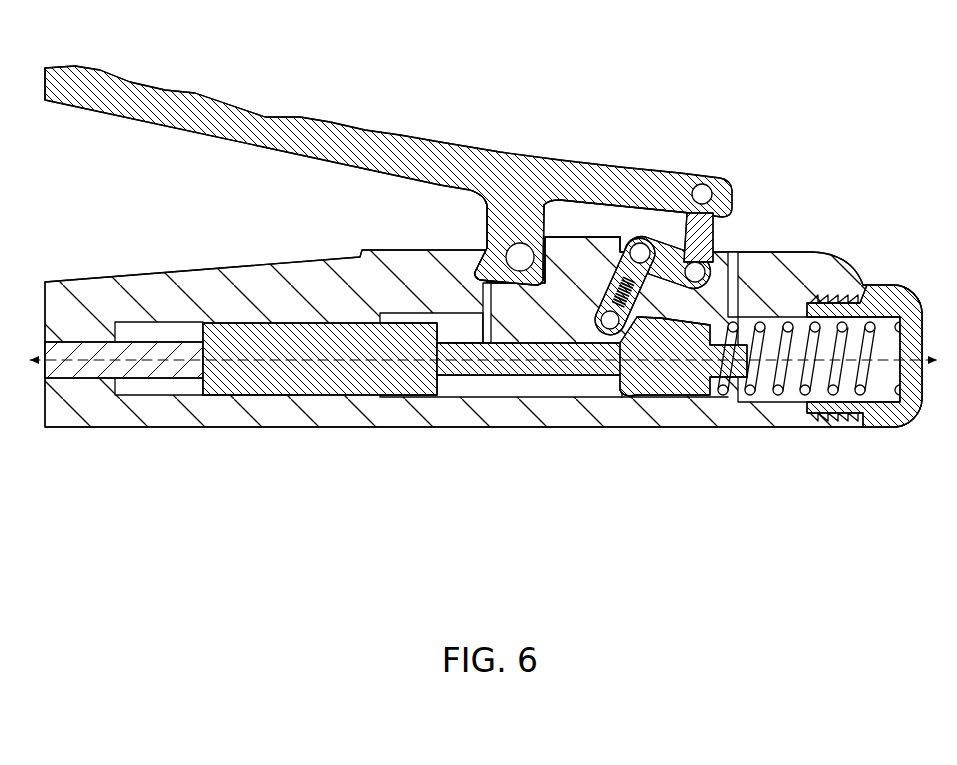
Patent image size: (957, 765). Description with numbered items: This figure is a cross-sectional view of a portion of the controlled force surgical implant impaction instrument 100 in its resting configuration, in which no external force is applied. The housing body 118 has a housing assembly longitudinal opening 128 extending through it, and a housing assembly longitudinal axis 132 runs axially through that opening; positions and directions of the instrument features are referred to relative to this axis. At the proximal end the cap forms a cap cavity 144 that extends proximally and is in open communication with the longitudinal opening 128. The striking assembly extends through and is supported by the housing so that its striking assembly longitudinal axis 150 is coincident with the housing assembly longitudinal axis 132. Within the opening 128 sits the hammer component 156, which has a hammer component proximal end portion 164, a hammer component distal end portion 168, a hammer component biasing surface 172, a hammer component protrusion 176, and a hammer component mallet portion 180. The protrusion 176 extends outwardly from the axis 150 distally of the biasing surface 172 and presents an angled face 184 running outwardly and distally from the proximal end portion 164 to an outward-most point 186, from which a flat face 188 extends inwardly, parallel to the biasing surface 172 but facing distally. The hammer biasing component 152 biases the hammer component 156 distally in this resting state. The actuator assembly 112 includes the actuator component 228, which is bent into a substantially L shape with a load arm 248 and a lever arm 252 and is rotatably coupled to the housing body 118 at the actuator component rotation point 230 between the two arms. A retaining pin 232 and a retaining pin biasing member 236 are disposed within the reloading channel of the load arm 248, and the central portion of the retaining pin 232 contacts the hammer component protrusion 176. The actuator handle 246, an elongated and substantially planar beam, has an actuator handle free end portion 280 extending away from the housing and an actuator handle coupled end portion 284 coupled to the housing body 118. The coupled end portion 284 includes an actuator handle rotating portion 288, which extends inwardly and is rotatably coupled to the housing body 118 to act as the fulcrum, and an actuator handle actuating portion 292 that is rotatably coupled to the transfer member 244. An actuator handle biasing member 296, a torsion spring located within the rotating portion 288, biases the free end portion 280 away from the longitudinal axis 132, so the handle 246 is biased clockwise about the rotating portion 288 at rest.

The instrument 100 is at (483, 270).
The actuator assembly 112 is at (562, 311).
The housing body 118 is at (296, 304).
The housing assembly longitudinal opening 128 is at (188, 388).
The housing assembly longitudinal axis 132 is at (490, 358).
The cap cavity 144 is at (878, 392).
The striking assembly longitudinal axis 150 is at (130, 357).
The hammer biasing component 152 is at (805, 395).
The hammer component 156 is at (403, 378).
The hammer component proximal end portion 164 is at (696, 398).
The hammer component distal end portion 168 is at (253, 380).
The hammer component biasing surface 172 is at (721, 395).
The hammer component protrusion 176 is at (637, 382).
The hammer component mallet portion 180 is at (320, 375).
The angled face 184 is at (655, 386).
The outward-most point 186 is at (627, 398).
The flat face 188 is at (567, 377).
The actuator component 228 is at (640, 236).
The actuator component rotation point 230 is at (642, 252).
The retaining pin 232 is at (560, 325).
The retaining pin biasing member 236 is at (617, 232).
The transfer member 244 is at (712, 235).
The actuator handle 246 is at (270, 123).
The load arm 248 is at (610, 282).
The lever arm 252 is at (718, 241).
The actuator handle free end portion 280 is at (68, 83).
The actuator handle coupled end portion 284 is at (613, 180).
The actuator handle rotating portion 288 is at (493, 233).
The actuator handle actuating portion 292 is at (726, 180).
The actuator handle biasing member 296 is at (513, 250).